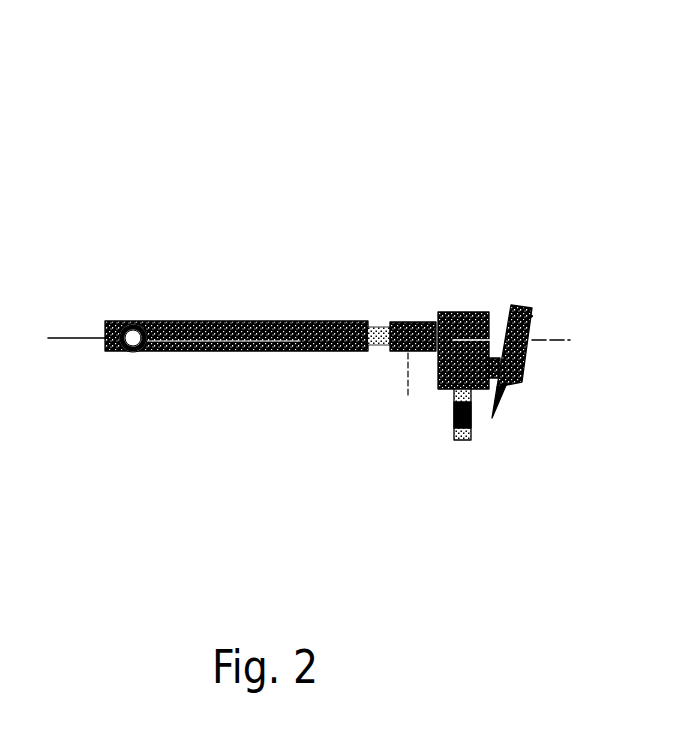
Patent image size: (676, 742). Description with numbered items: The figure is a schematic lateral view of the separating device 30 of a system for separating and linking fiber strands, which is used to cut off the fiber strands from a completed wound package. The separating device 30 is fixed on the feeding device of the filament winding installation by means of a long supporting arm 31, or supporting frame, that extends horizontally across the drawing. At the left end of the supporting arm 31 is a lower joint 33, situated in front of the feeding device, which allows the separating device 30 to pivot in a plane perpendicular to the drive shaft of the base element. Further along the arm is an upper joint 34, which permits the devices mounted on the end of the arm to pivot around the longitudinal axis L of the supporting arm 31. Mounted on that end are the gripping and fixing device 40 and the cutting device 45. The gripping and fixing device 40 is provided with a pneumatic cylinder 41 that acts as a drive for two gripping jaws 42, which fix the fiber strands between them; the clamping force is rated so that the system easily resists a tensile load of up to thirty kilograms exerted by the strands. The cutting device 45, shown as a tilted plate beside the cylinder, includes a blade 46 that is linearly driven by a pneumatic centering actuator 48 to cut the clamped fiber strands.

The separating device 30 is at (240, 165).
The longitudinal axis L is at (210, 321).
The supporting arm 31 is at (240, 344).
The lower joint 33 is at (132, 343).
The upper joint 34 is at (380, 325).
The gripping and fixing device 40 is at (425, 406).
The pneumatic cylinder 41 is at (468, 318).
The gripping jaws 42 is at (462, 442).
The cutting device 45 is at (531, 280).
The blade 46 is at (497, 405).
The pneumatic centering actuator 48 is at (532, 316).